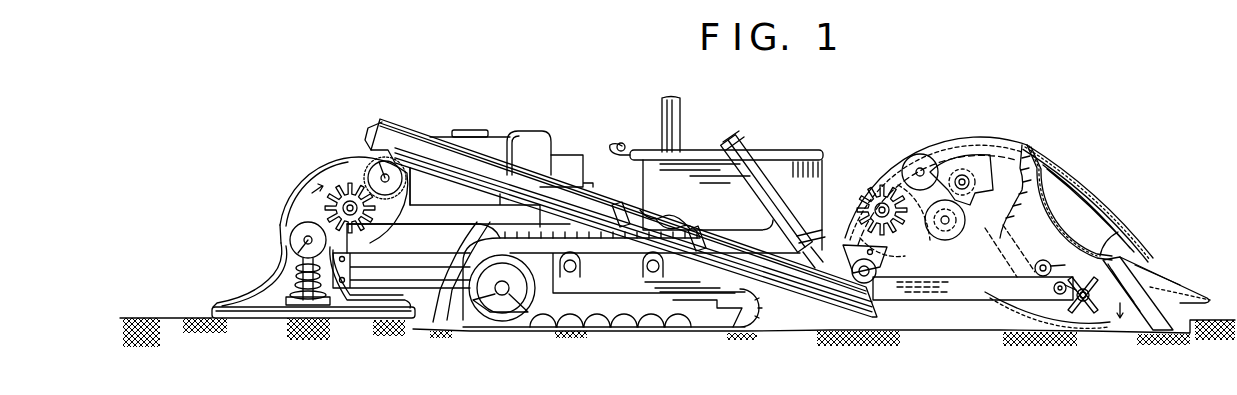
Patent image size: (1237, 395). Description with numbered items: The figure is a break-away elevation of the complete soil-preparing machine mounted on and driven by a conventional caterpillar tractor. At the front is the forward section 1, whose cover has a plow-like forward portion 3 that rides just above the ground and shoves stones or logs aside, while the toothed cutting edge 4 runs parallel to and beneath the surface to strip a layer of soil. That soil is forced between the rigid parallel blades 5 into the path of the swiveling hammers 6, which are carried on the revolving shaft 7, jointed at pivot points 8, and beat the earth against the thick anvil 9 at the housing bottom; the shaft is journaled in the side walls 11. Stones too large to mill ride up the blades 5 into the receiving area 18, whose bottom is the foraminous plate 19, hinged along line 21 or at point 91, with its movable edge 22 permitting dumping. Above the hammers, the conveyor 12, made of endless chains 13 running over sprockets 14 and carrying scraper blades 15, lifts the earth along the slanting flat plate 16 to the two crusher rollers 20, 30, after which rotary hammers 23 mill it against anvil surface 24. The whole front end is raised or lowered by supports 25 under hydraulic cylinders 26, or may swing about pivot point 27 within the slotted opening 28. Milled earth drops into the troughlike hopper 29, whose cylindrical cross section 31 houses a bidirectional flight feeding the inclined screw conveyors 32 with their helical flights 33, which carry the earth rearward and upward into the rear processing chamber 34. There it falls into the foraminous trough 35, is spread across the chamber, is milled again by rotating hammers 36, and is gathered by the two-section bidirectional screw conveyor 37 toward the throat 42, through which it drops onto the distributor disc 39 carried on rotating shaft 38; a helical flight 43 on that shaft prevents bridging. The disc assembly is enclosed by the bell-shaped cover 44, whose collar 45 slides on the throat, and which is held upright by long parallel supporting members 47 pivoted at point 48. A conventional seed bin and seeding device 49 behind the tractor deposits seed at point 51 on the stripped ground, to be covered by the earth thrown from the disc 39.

The forward section 1 is at (1012, 150).
The forward portion of the cover 3 is at (1158, 270).
The cutting edge 4 is at (1183, 330).
The blades 5 is at (1146, 257).
The hammers 6 is at (1110, 310).
The revolving shaft 7 is at (1055, 292).
The pivot points 8 is at (1090, 312).
The anvil 9 is at (1068, 317).
The hinge point 91 is at (1162, 322).
The side walls 11 is at (1000, 211).
The conveyor 12 is at (1012, 260).
The endless chains 13 is at (975, 172).
The sprockets 14 is at (960, 175).
The scraper blades 15 is at (1035, 228).
The flat plate 16 is at (952, 240).
The receiving area 18 is at (1080, 217).
The foraminous plate 19 is at (1043, 178).
The crusher roller 20 is at (947, 230).
The hinge line 21 is at (1100, 258).
The edge of plate 22 is at (1045, 146).
The rotary hammers 23 is at (883, 188).
The anvil surface 24 is at (898, 237).
The supports 25 is at (955, 290).
The hydraulic cylinders 26 is at (757, 175).
The pivot point 27 is at (878, 250).
The slotted opening 28 is at (1080, 257).
The troughlike hopper 29 is at (877, 240).
The crusher roller 30 is at (912, 165).
The cylindrical cross section 31 is at (862, 278).
The screw conveyor 32 is at (556, 192).
The helical flight 33 is at (672, 218).
The rear processing chamber 34 is at (338, 158).
The foraminous trough 35 is at (373, 170).
The rotating hammers 36 is at (330, 201).
The bidirectional screw conveyor 37 is at (290, 236).
The rotating shaft 38 is at (305, 208).
The distributor disc 39 is at (350, 318).
The throat 42 is at (296, 262).
The helical flight 43 is at (288, 305).
The bell-shaped cover 44 is at (230, 300).
The collar 45 is at (287, 270).
The supporting members 47 is at (415, 272).
The pivot point 48 is at (350, 259).
The seed bin and seeding device 49 is at (434, 180).
The seed deposit point 51 is at (428, 338).